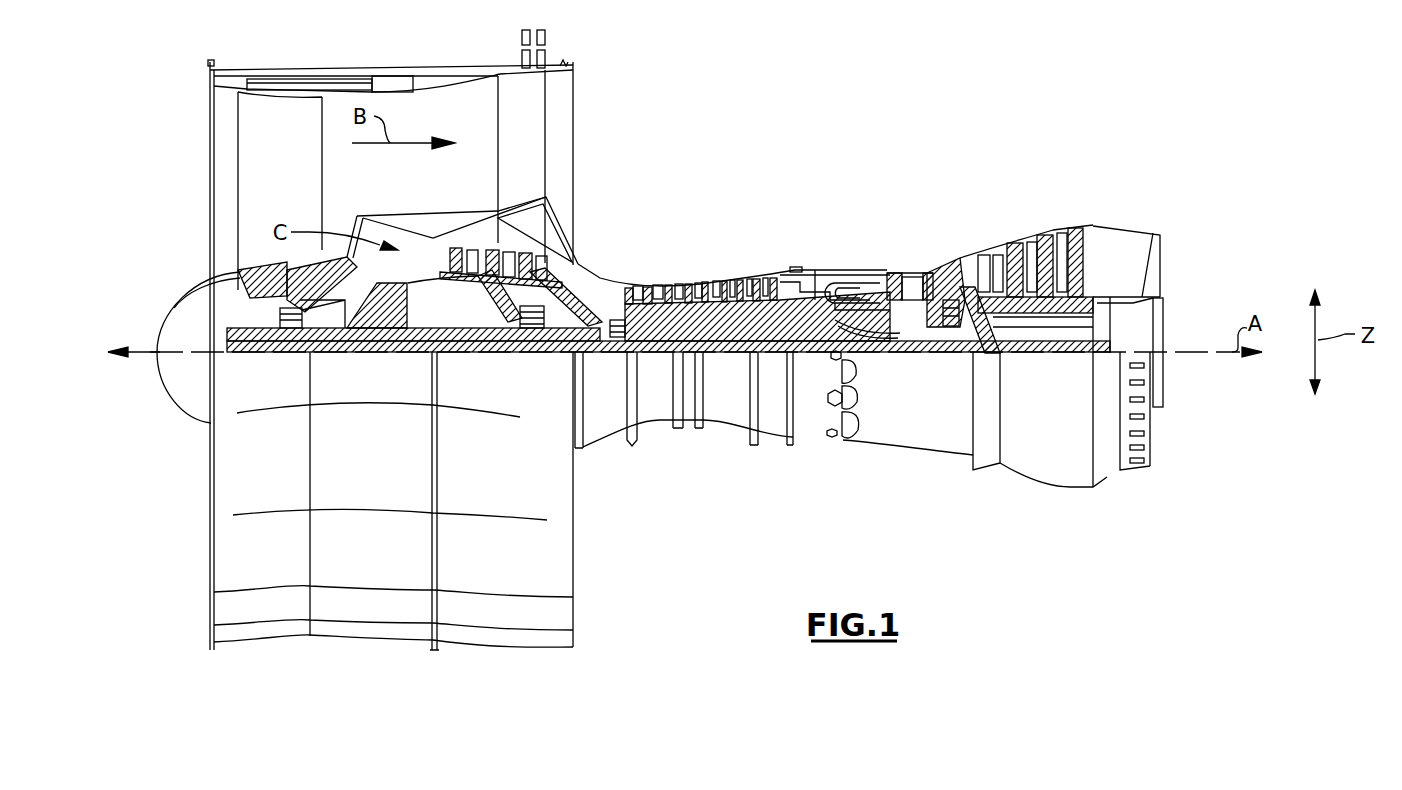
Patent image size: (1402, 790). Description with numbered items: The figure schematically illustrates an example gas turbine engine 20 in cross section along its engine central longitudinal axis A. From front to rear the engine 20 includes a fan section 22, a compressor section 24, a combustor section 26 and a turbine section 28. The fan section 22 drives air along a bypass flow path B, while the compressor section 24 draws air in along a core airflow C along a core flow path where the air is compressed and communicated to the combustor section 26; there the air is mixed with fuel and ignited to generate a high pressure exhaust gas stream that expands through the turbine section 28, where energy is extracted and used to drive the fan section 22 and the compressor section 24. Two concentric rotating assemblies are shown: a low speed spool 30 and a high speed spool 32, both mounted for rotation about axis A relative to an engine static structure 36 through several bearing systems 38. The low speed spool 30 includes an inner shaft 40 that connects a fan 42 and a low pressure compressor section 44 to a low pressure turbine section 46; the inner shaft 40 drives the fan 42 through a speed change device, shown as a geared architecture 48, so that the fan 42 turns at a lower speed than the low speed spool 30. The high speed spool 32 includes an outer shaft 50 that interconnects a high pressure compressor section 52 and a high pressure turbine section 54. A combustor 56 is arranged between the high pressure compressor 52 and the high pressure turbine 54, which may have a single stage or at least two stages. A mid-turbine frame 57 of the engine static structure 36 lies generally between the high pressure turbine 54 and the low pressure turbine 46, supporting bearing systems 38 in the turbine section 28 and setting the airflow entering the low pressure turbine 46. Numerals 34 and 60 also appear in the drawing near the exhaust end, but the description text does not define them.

The gas turbine engine 20 is at (851, 118).
The fan section 22 is at (196, 48).
The compressor section 24 is at (432, 188).
The combustor section 26 is at (885, 188).
The turbine section 28 is at (1108, 188).
The low speed spool 30 is at (729, 355).
The high speed spool 32 is at (774, 300).
The turbine exhaust case 34 is at (1053, 313).
The engine static structure 36 is at (770, 438).
The bearing systems 38 is at (285, 340).
The inner shaft 40 is at (588, 354).
The fan 42 is at (264, 195).
The low pressure compressor section 44 is at (507, 253).
The low pressure turbine section 46 is at (1040, 285).
The geared architecture 48 is at (398, 337).
The outer shaft 50 is at (852, 332).
The high pressure compressor section 52 is at (703, 313).
The high pressure turbine section 54 is at (912, 273).
The combustor 56 is at (849, 290).
The mid-turbine frame 57 is at (954, 257).
The airfoils 60 is at (960, 305).